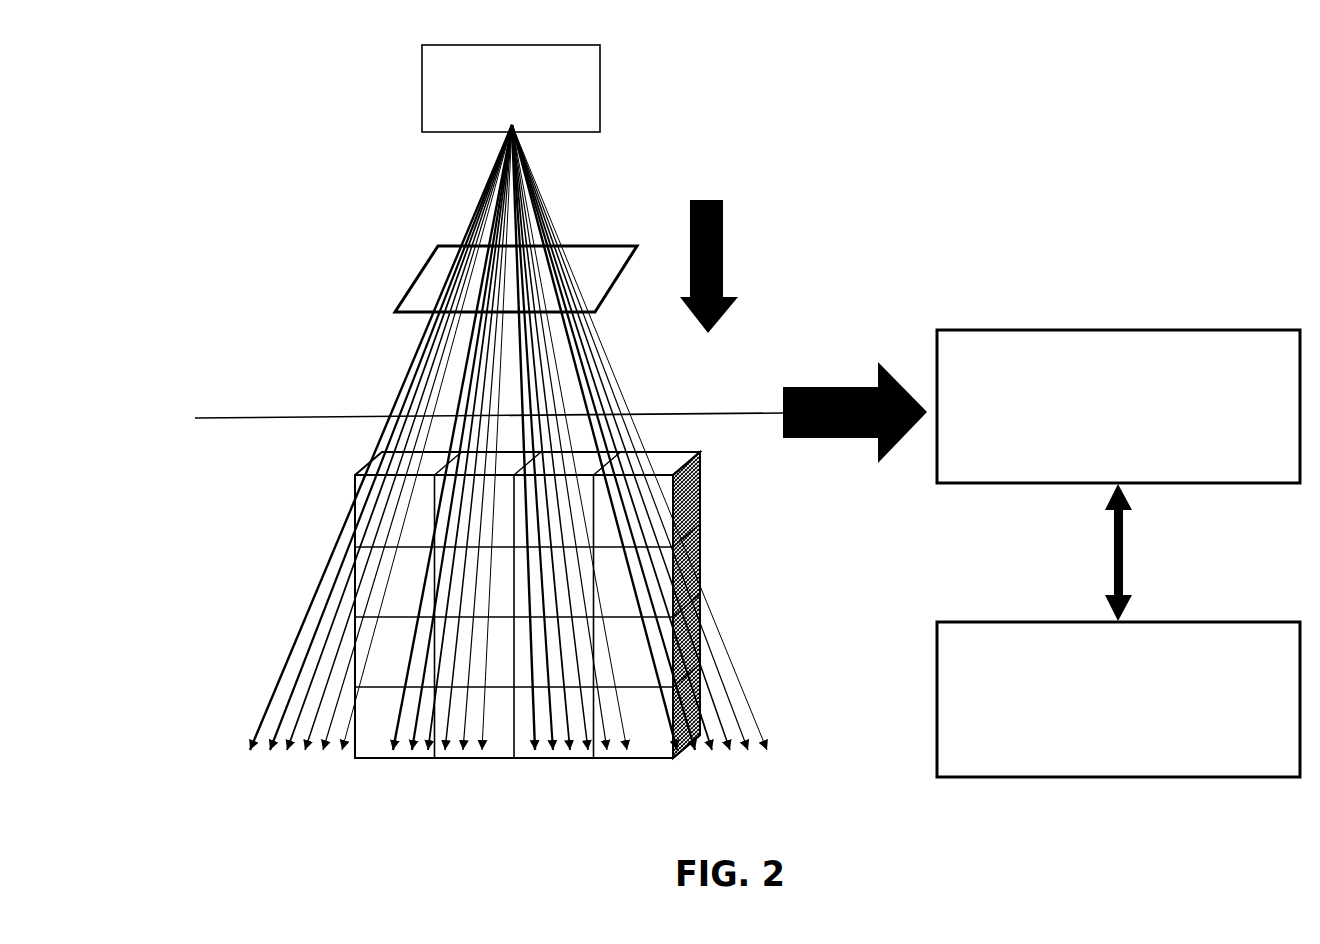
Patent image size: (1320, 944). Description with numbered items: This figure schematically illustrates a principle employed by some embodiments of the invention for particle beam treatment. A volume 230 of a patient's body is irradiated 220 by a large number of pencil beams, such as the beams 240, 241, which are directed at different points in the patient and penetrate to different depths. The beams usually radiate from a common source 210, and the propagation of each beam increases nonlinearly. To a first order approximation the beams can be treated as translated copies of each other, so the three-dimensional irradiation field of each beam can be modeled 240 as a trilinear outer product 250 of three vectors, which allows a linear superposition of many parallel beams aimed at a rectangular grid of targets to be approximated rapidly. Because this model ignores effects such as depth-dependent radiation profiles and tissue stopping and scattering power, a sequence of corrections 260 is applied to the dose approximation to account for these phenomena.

The common source 210 is at (601, 80).
The irradiation 220 is at (722, 236).
The volume 230 is at (703, 482).
The pencil beam 240 is at (330, 588).
The pencil beam 241 is at (722, 680).
The trilinear outer product 250 is at (1072, 330).
The corrections 260 is at (1072, 622).